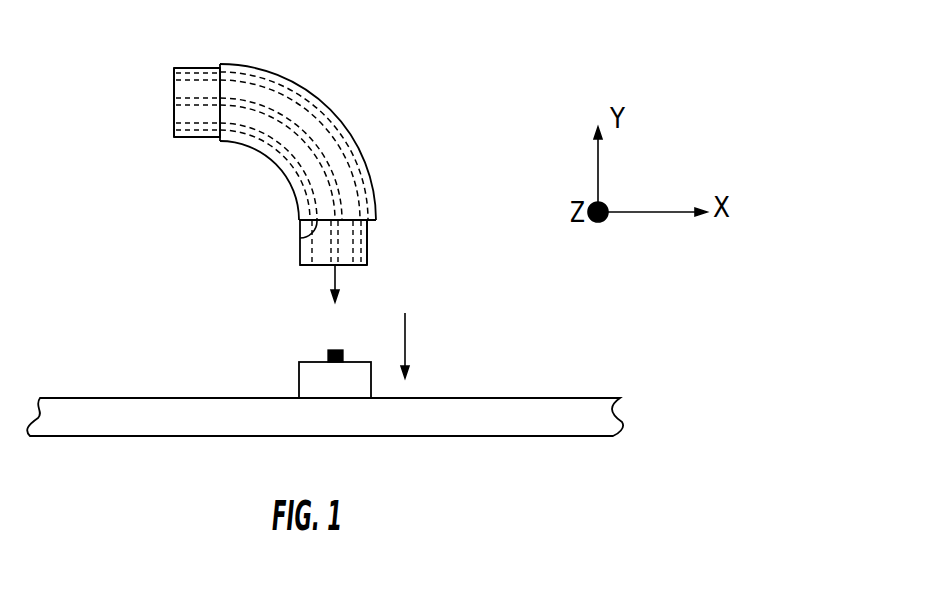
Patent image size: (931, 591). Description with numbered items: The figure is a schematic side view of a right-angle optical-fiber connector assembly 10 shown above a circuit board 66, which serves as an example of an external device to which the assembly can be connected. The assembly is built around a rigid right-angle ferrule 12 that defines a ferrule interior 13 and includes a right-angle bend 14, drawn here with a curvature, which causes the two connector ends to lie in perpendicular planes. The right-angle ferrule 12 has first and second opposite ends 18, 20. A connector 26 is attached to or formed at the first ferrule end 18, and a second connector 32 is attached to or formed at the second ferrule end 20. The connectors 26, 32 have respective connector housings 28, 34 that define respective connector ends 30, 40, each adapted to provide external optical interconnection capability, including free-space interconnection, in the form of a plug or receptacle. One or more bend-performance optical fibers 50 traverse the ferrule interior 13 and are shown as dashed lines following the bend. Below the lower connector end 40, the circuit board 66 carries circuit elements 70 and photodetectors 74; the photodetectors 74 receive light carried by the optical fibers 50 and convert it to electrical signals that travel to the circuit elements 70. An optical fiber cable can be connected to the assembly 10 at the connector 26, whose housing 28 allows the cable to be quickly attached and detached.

The right-angle optical-fiber connector assembly 10 is at (523, 99).
The right-angle ferrule 12 is at (360, 163).
The ferrule interior 13 is at (330, 152).
The right-angle bend 14 is at (235, 174).
The first ferrule end 18 is at (217, 88).
The second ferrule end 20 is at (303, 230).
The connector 26 is at (155, 41).
The connector housing 28 is at (192, 138).
The connector end 30 is at (175, 102).
The connector 32 is at (380, 229).
The connector housing 34 is at (370, 252).
The connector end 40 is at (312, 265).
The bend-performance optical fibers 50 is at (285, 150).
The circuit board 66 is at (558, 398).
The circuit elements 70 is at (320, 360).
The photodetectors 74 is at (337, 348).